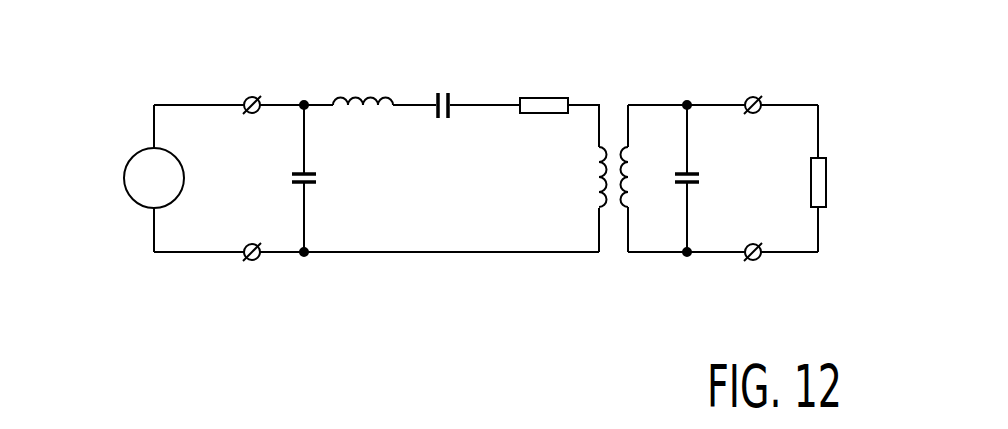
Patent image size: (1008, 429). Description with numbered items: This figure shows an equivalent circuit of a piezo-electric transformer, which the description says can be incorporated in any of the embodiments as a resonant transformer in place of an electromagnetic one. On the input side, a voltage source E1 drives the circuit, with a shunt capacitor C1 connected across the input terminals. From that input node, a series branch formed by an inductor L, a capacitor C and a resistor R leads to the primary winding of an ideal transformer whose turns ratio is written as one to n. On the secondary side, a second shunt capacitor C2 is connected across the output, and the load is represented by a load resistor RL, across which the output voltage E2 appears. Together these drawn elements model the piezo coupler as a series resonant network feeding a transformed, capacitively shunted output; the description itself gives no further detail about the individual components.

The input voltage source E1 is at (109, 162).
The first shunt capacitor C1 is at (323, 178).
The series inductor L is at (363, 82).
The series capacitor C is at (443, 88).
The series resistor R is at (544, 86).
The second shunt capacitor C2 is at (705, 178).
The load resistor RL is at (799, 178).
The output voltage E2 is at (848, 207).